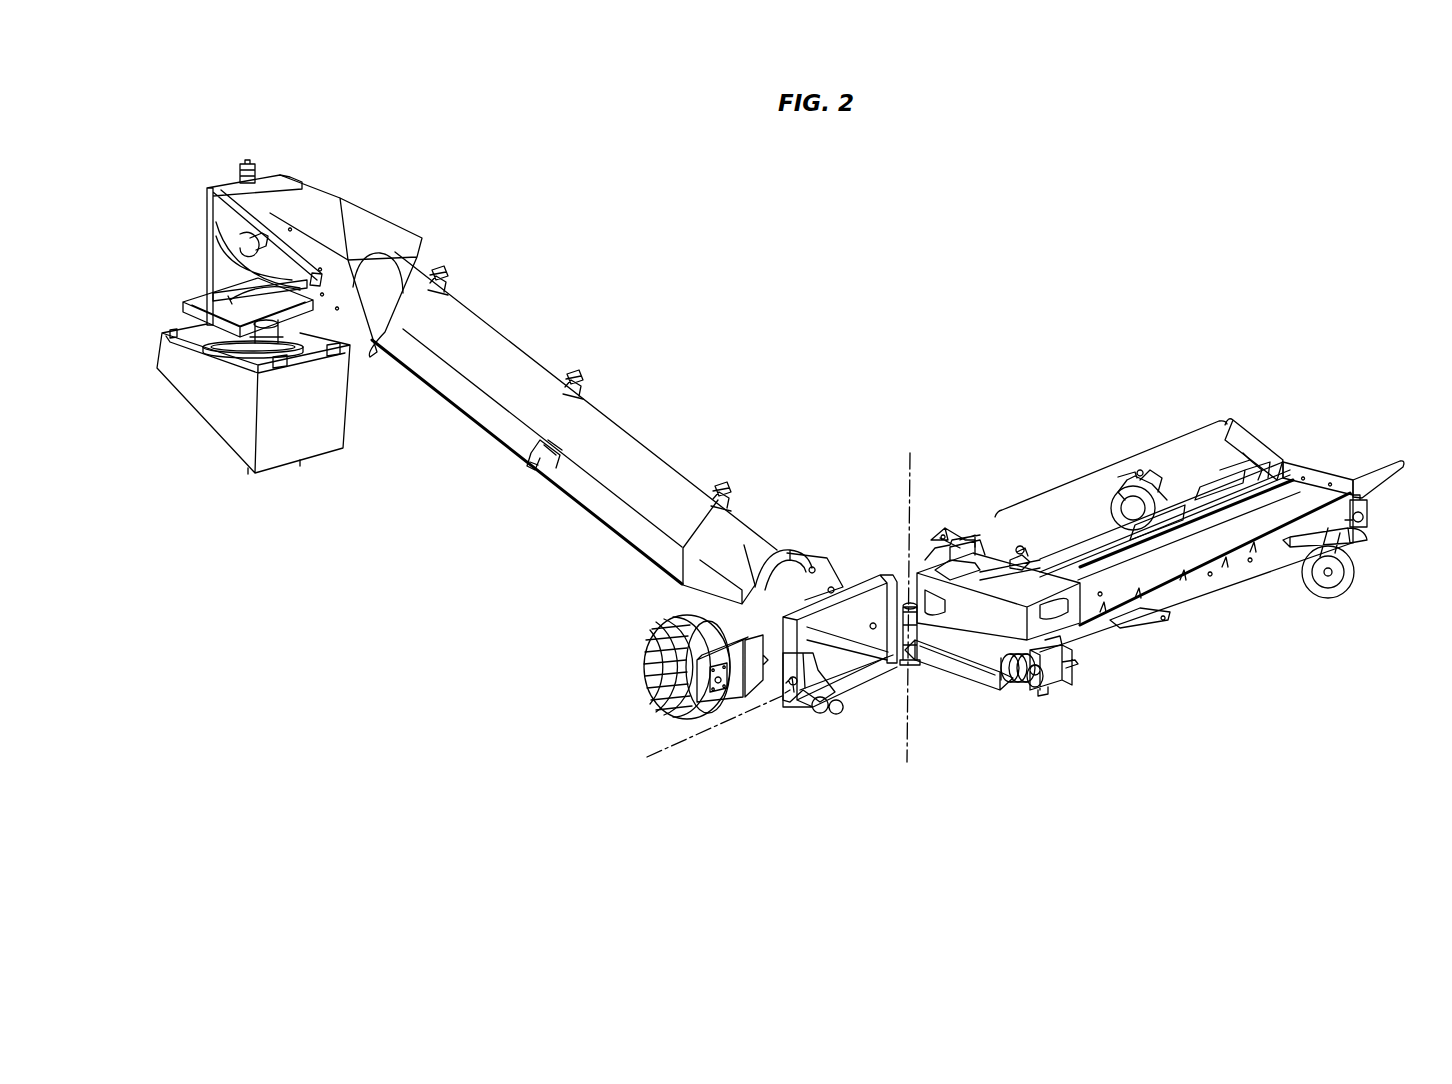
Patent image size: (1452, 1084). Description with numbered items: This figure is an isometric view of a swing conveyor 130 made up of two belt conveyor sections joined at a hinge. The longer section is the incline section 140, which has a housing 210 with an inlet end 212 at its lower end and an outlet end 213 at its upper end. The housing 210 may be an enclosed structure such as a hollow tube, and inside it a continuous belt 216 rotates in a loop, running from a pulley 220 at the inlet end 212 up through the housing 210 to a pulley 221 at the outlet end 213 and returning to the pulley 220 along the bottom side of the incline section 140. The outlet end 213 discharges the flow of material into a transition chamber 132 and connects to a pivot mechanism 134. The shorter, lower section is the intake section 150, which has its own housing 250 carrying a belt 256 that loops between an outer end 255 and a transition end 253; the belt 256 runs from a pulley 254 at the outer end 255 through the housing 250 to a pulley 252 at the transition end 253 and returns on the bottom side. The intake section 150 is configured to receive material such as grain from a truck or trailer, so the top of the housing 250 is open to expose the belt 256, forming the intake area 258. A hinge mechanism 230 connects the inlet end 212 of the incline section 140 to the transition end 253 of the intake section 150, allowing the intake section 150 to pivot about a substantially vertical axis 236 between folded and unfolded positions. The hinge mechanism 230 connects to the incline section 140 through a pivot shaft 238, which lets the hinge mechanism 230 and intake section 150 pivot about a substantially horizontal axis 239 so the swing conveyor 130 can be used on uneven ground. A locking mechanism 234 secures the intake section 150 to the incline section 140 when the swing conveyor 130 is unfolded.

The swing conveyor 130 is at (960, 295).
The transition chamber 132 is at (325, 420).
The pivot mechanism 134 is at (200, 318).
The incline section 140 is at (640, 350).
The intake section 150 is at (1260, 679).
The housing 210 is at (636, 440).
The inlet end 212 is at (836, 558).
The outlet end 213 is at (346, 180).
The belt 216 is at (606, 527).
The pulley 220 is at (810, 706).
The pulley 221 is at (210, 228).
The hinge mechanism 230 is at (922, 668).
The locking mechanism 234 is at (1052, 680).
The axis 236 is at (912, 491).
The pivot shaft 238 is at (782, 690).
The axis 239 is at (680, 742).
The housing 250 is at (1230, 578).
The pulley 252 is at (1022, 682).
The transition end 253 is at (964, 684).
The pulley 254 is at (1360, 515).
The outer end 255 is at (1382, 515).
The belt 256 is at (1110, 585).
The intake area 258 is at (1111, 475).